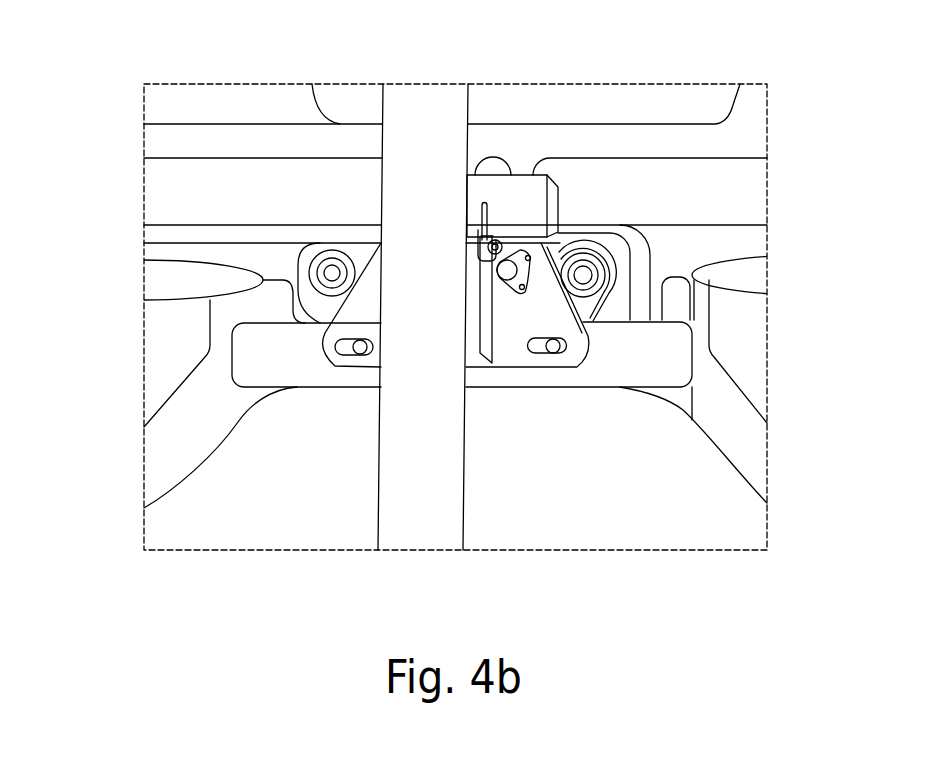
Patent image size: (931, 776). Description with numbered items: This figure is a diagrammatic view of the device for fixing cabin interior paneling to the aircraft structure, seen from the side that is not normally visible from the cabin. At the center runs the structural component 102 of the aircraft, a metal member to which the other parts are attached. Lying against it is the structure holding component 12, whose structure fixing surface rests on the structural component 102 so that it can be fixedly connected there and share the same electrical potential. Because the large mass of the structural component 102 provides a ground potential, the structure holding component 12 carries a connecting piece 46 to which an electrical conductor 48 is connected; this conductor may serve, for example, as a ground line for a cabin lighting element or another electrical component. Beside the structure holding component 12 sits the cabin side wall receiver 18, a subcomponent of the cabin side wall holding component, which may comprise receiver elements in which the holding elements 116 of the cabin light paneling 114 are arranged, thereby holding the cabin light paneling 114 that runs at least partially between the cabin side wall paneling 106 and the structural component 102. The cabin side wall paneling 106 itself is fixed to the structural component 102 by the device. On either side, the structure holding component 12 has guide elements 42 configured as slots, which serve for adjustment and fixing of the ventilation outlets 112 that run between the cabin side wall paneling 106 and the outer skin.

The structure holding component 12 is at (507, 357).
The cabin side wall receiver 18 is at (602, 248).
The guide element 42 is at (345, 353).
The connecting piece 46 is at (480, 243).
The electrical conductor 48 is at (482, 203).
The structural component 102 is at (408, 525).
The cabin side wall paneling 106 is at (210, 525).
The ventilation outlets 112 is at (178, 435).
The cabin light paneling 114 is at (730, 137).
The holding elements 116 is at (497, 193).